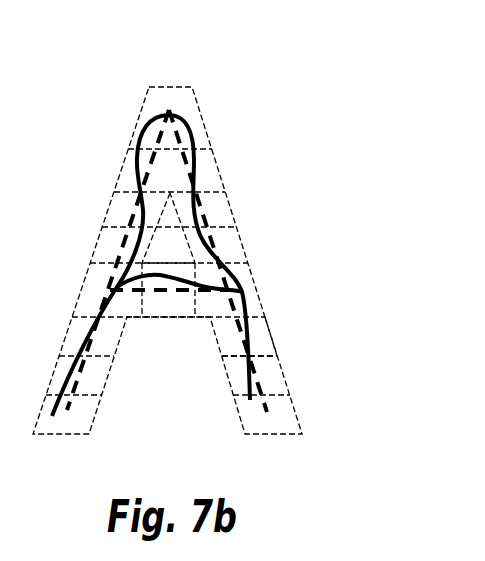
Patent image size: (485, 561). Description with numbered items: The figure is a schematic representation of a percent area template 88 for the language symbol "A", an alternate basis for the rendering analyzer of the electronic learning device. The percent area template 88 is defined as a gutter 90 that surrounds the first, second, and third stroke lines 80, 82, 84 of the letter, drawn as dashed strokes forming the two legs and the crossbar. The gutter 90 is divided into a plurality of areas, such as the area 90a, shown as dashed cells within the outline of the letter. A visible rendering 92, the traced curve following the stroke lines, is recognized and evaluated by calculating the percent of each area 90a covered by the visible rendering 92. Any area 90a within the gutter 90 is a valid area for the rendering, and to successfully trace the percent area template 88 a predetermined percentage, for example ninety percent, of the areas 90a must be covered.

The percent area template 88 is at (118, 124).
The gutter 90 is at (186, 88).
The area 90a is at (258, 342).
The first stroke line 80 is at (135, 210).
The second stroke line 82 is at (203, 212).
The third stroke line 84 is at (170, 292).
The visible rendering 92 is at (245, 292).